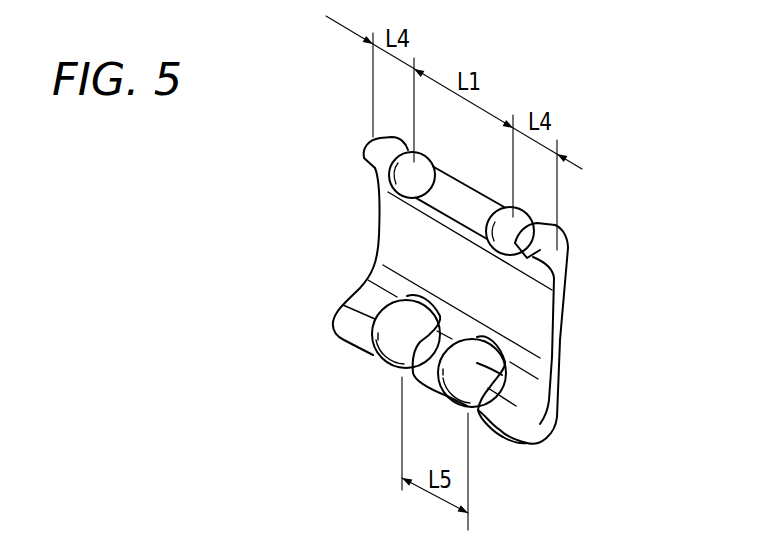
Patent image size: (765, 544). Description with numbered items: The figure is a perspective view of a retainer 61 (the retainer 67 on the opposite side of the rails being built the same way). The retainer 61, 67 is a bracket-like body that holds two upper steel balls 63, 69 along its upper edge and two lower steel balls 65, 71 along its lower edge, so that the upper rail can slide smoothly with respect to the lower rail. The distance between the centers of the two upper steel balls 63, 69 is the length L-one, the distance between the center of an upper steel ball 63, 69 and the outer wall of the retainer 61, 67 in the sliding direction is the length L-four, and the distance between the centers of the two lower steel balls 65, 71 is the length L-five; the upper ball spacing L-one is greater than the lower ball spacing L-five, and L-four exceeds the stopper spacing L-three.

The retainer 61 is at (523, 290).
The retainer 67 is at (565, 320).
The first upper steel ball 63 is at (456, 203).
The second upper steel ball 69 is at (402, 178).
The first lower steel ball 65 is at (441, 373).
The second lower steel ball 71 is at (378, 316).